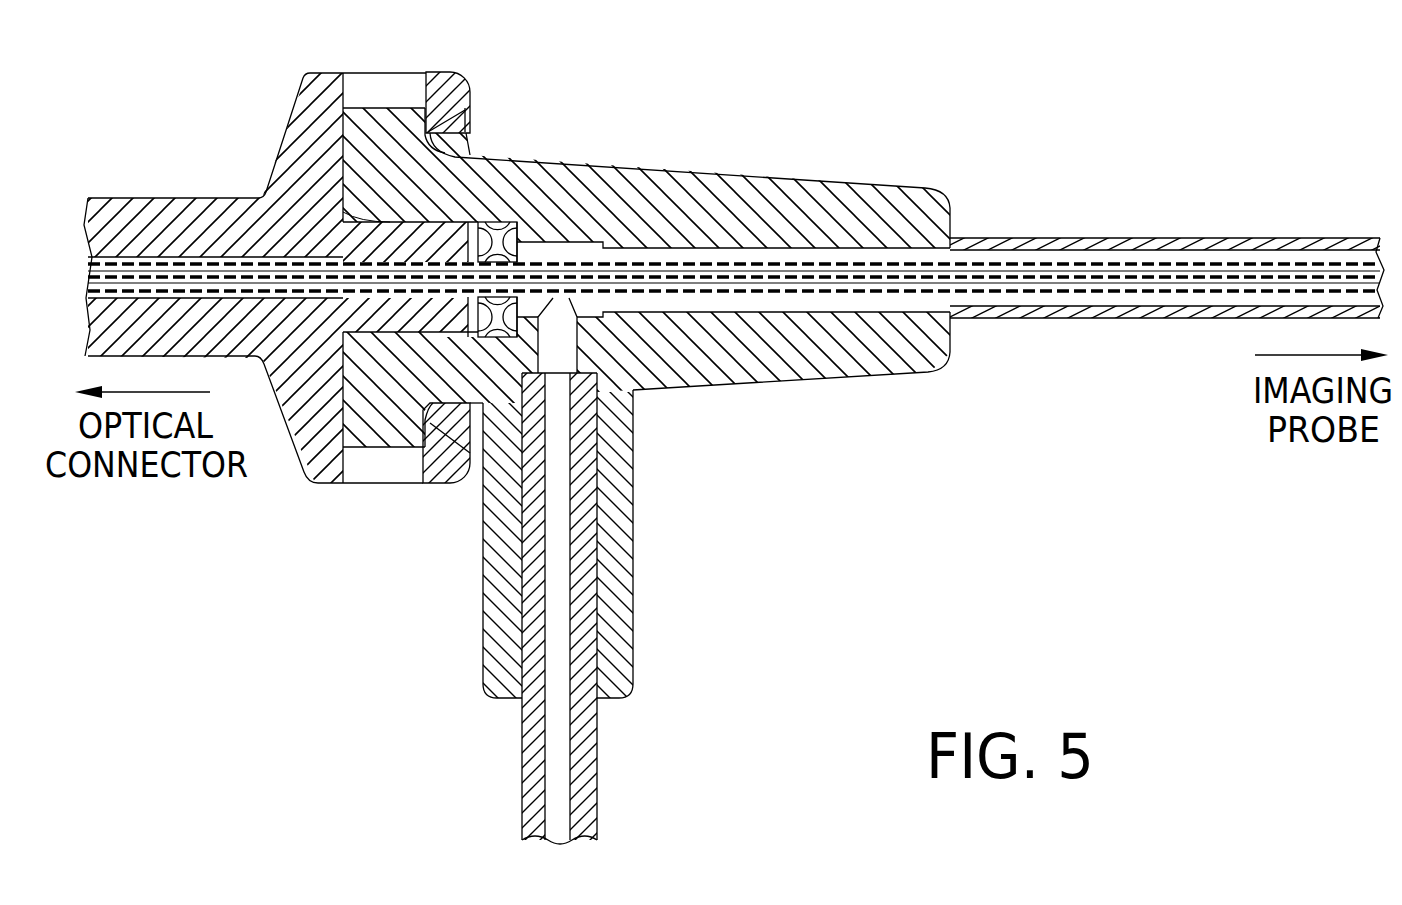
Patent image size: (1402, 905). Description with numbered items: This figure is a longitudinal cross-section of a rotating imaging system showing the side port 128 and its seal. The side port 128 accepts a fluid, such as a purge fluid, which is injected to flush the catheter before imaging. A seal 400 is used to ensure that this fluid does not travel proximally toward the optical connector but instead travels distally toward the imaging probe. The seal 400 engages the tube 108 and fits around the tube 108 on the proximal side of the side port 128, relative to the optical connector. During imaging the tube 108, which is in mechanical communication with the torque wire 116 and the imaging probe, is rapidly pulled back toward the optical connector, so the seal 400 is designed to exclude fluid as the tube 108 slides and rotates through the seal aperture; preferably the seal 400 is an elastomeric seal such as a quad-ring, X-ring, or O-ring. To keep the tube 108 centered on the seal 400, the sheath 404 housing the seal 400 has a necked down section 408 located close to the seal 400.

The tube 108 is at (113, 258).
The sheath 404 is at (167, 217).
The torque wire 116 is at (243, 262).
The necked down section 408 is at (425, 250).
The seal 400 is at (505, 222).
The side port 128 is at (613, 521).